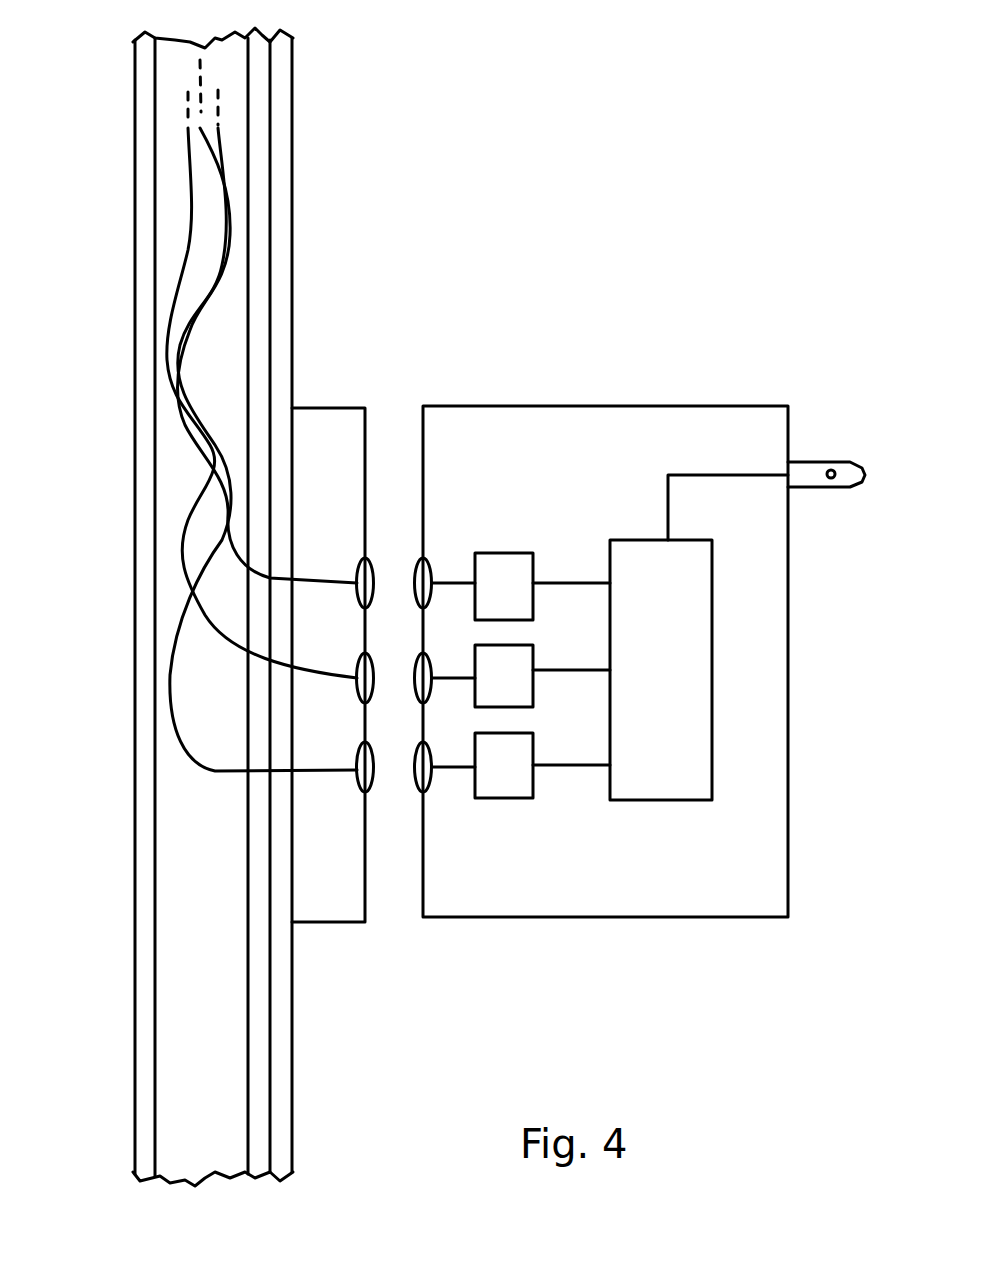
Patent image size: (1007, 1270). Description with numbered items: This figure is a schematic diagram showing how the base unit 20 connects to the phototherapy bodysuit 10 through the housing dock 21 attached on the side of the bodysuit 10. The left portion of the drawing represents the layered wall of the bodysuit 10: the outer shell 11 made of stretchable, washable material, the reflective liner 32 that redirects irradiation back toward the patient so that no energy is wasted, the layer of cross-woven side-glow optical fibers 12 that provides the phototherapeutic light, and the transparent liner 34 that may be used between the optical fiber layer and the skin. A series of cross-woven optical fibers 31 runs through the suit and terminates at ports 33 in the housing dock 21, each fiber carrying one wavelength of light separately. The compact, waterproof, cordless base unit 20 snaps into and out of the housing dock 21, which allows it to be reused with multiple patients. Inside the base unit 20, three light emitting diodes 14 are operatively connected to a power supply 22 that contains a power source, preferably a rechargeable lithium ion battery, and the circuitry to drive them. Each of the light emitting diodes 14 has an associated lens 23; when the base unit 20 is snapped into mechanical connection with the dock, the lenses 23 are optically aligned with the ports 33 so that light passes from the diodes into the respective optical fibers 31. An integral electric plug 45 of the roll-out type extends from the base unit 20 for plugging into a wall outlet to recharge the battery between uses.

The bodysuit 10 is at (306, 1080).
The shell 11 is at (286, 80).
The layer of cross-woven side-glow optical fibers 12 is at (178, 955).
The light emitting diodes 14 is at (535, 594).
The base unit 20 is at (648, 393).
The housing dock 21 is at (318, 925).
The power supply 22 is at (712, 678).
The lenses 23 is at (425, 560).
The cross-woven optical fibers 31 is at (227, 197).
The reflective liner 32 is at (258, 157).
The ports 33 is at (372, 742).
The transparent liner 34 is at (146, 1070).
The integral electric plug 45 is at (824, 460).